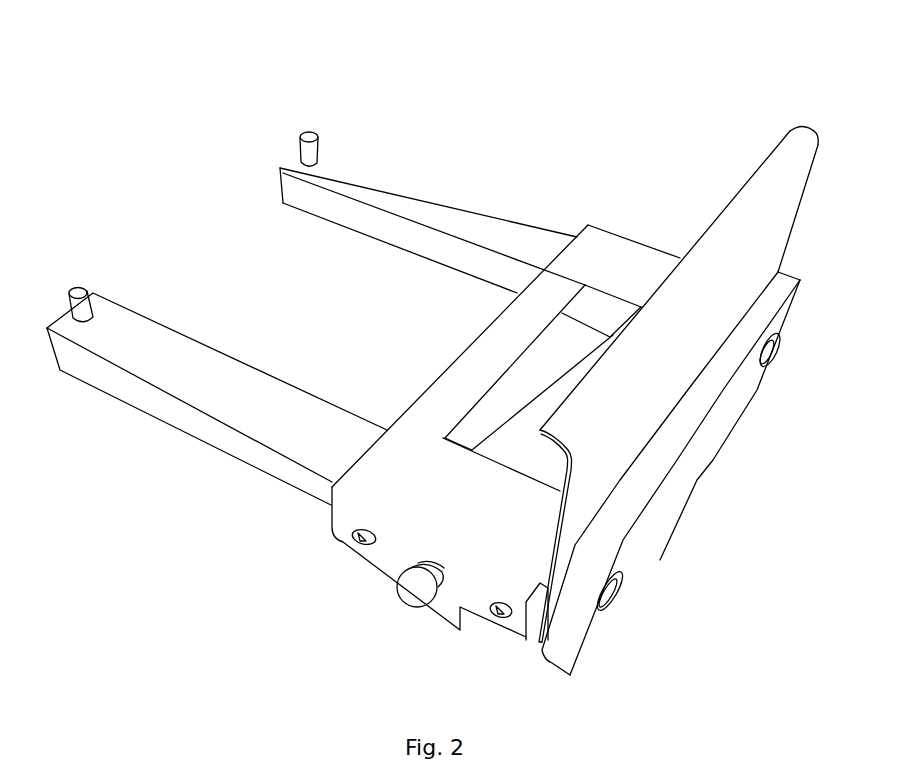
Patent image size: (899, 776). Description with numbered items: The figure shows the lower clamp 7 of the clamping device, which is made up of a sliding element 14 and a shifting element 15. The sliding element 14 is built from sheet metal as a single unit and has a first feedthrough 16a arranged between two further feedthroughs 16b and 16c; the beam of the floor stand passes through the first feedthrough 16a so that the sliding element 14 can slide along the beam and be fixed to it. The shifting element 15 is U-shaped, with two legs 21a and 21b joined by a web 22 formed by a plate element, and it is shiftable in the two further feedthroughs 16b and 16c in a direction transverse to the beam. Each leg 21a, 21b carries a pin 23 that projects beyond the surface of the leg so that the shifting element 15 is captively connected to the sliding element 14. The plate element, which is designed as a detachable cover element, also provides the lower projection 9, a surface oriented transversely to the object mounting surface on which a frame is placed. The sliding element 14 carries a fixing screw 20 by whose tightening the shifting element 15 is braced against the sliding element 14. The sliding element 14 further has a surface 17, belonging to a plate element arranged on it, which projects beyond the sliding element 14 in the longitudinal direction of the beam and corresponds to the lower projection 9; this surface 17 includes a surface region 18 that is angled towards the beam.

The lower clamp 7 is at (110, 153).
The lower projection 9 is at (547, 608).
The sliding element 14 is at (484, 528).
The shifting element 15 is at (212, 452).
The first feedthrough 16a is at (582, 352).
The further feedthrough 16b is at (382, 415).
The further feedthrough 16c is at (500, 297).
The surface 17 is at (662, 408).
The surface region 18 is at (778, 158).
The fixing screw 20 is at (413, 593).
The leg 21a is at (215, 367).
The leg 21b is at (328, 210).
The web 22 is at (707, 447).
The pin 23 is at (298, 150).